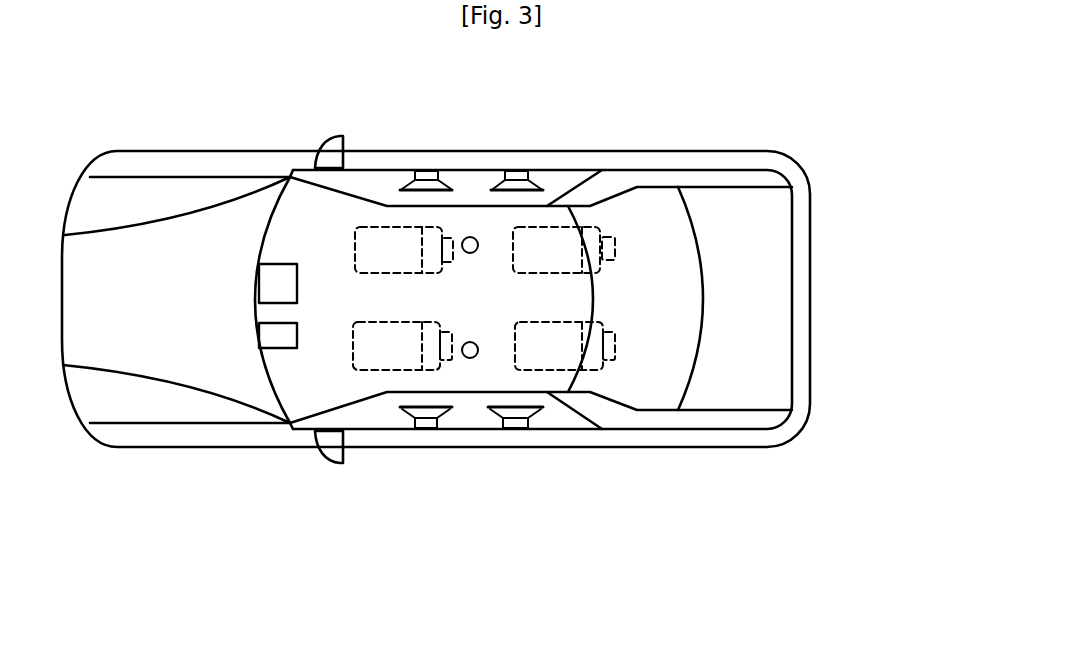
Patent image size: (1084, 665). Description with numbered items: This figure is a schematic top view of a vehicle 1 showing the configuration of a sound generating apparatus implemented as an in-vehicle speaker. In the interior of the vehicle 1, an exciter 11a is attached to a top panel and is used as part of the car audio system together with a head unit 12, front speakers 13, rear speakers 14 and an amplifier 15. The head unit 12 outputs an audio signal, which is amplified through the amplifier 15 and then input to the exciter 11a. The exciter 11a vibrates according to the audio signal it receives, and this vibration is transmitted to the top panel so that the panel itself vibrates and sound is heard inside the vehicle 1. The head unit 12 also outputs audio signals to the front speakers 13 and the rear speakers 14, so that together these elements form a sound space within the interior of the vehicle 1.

The vehicle 1 is at (740, 437).
The exciter 11a is at (470, 342).
The head unit 12 is at (270, 264).
The front speakers 13 is at (428, 171).
The rear speakers 14 is at (520, 171).
The amplifier 15 is at (280, 348).